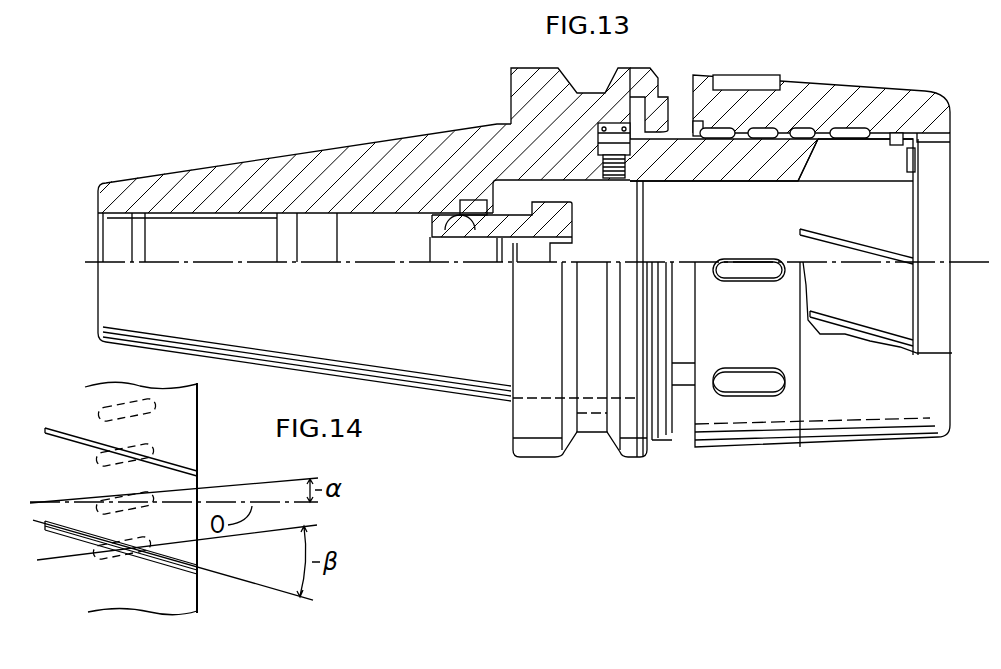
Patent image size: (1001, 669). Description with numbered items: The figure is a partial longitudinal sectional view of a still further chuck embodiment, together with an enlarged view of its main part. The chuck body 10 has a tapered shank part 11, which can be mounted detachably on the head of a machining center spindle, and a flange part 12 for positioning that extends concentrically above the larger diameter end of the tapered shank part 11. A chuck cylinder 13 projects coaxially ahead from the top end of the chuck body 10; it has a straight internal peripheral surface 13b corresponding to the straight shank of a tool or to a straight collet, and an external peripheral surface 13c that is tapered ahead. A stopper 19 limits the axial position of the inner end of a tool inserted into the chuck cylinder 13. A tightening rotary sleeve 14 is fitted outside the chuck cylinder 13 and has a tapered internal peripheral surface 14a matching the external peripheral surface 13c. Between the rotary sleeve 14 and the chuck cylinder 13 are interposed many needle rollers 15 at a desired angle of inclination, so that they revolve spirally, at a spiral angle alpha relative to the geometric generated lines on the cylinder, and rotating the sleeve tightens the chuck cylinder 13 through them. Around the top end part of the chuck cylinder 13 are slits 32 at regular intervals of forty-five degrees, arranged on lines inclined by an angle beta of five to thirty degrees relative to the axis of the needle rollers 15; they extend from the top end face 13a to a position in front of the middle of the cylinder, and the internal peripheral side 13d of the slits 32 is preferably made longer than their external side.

In FIG. 13, the chuck body 10 is at (550, 140).
In FIG. 13, the tapered shank part 11 is at (449, 128).
In FIG. 13, the flange part 12 is at (542, 440).
In FIG. 13, the chuck cylinder 13 is at (747, 150).
In FIG. 14, the chuck cylinder 13 is at (178, 421).
In FIG. 13, the top end face 13a is at (915, 165).
In FIG. 13, the straight internal peripheral surface 13b is at (713, 183).
In FIG. 13, the external peripheral surface 13c is at (845, 132).
In FIG. 13, the internal peripheral side of the slits 13d is at (807, 162).
In FIG. 13, the tightening rotary sleeve 14 is at (848, 90).
In FIG. 13, the tapered internal peripheral surface 14a is at (933, 138).
In FIG. 13, the needle rollers 15 is at (733, 132).
In FIG. 14, the needle rollers 15 is at (108, 497).
In FIG. 13, the stopper 19 is at (557, 221).
In FIG. 13, the slits 32 is at (888, 167).
In FIG. 14, the slits 32 is at (185, 450).